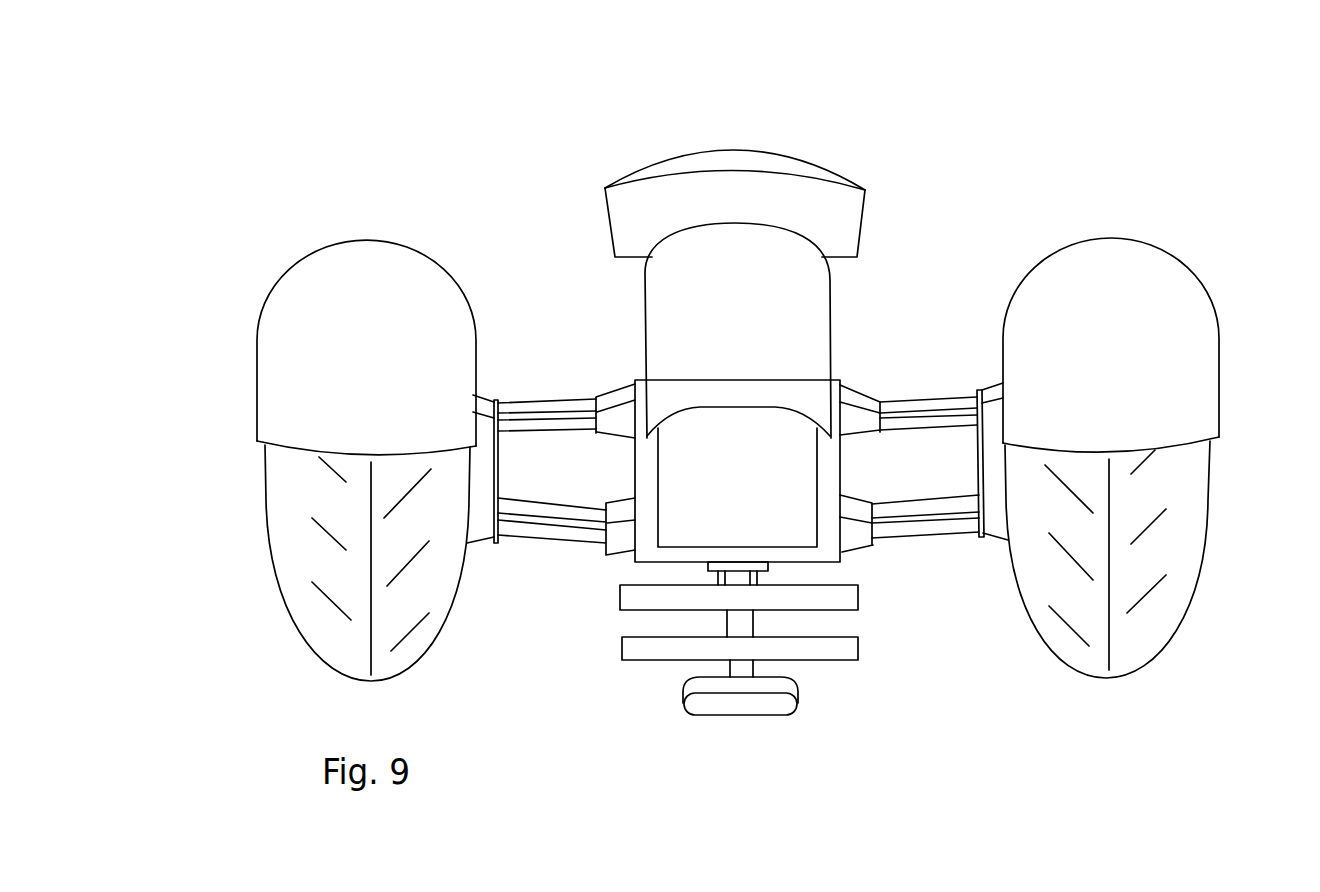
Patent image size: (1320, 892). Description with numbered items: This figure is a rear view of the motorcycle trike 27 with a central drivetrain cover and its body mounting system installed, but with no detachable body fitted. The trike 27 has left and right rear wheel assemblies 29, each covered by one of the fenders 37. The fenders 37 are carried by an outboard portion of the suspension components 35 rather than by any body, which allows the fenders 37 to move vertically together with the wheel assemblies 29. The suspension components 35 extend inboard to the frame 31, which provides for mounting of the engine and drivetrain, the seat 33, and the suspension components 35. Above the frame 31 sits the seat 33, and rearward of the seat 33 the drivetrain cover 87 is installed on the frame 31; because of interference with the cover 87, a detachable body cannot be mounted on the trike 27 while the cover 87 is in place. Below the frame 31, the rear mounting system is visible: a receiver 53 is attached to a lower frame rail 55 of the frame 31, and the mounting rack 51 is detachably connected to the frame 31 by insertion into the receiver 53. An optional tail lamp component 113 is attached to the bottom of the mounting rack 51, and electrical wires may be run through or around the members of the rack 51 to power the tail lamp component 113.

The motorcycle trike 27 is at (729, 418).
The rear wheel assemblies 29 is at (288, 517).
The frame 31 is at (648, 552).
The seat 33 is at (722, 162).
The suspension components 35 is at (565, 398).
The fenders 37 is at (300, 390).
The mounting rack 51 is at (620, 680).
The receiver 53 is at (706, 570).
The lower frame rail 55 is at (785, 555).
The drivetrain cover 87 is at (803, 338).
The tail lamp component 113 is at (720, 718).